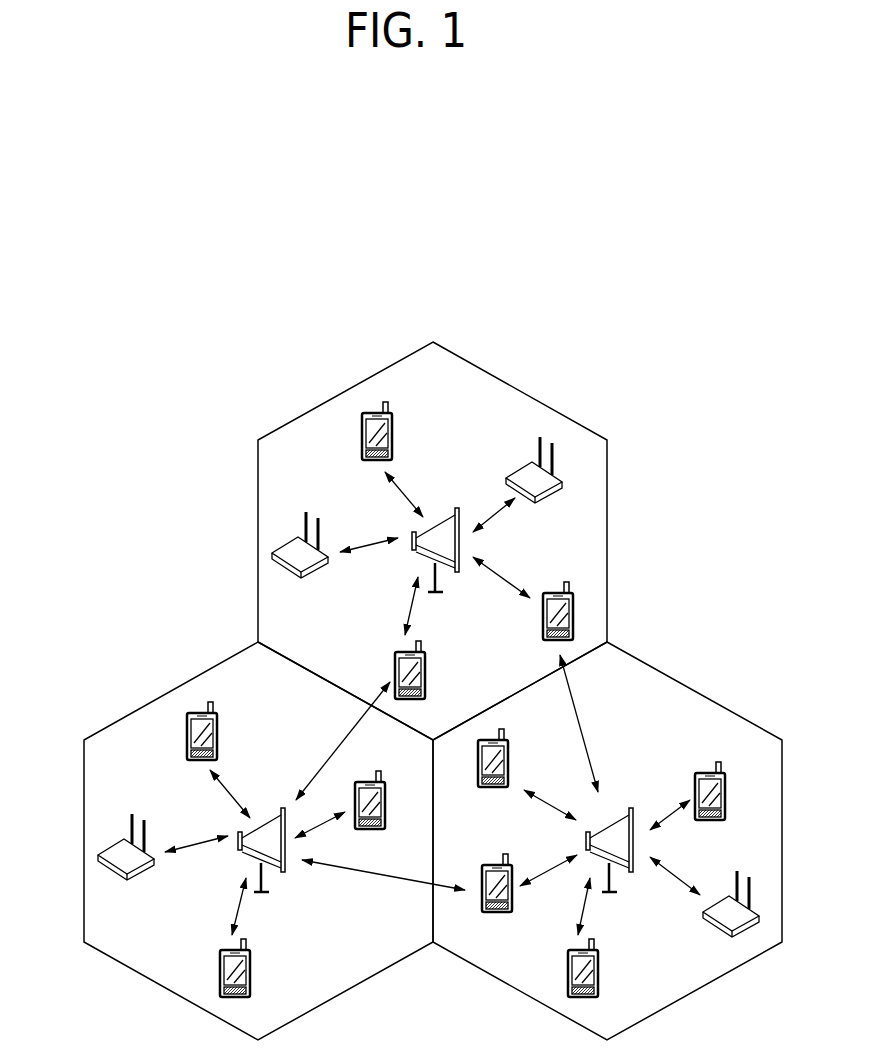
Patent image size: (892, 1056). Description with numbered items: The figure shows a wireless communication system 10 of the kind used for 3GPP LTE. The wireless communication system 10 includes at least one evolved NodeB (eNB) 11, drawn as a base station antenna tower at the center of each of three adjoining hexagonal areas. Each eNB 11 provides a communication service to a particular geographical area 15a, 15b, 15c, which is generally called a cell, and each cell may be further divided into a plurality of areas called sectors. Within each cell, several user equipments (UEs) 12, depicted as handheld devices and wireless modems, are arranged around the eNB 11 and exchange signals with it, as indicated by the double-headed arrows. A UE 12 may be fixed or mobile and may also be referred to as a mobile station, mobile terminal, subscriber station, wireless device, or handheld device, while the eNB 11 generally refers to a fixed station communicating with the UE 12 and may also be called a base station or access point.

The wireless communication system 10 is at (433, 691).
The evolved NodeB (eNB) 11 is at (445, 512).
The user equipment (UE) 12 is at (390, 437).
The cell 15a is at (607, 534).
The cell 15b is at (722, 703).
The cell 15c is at (150, 703).